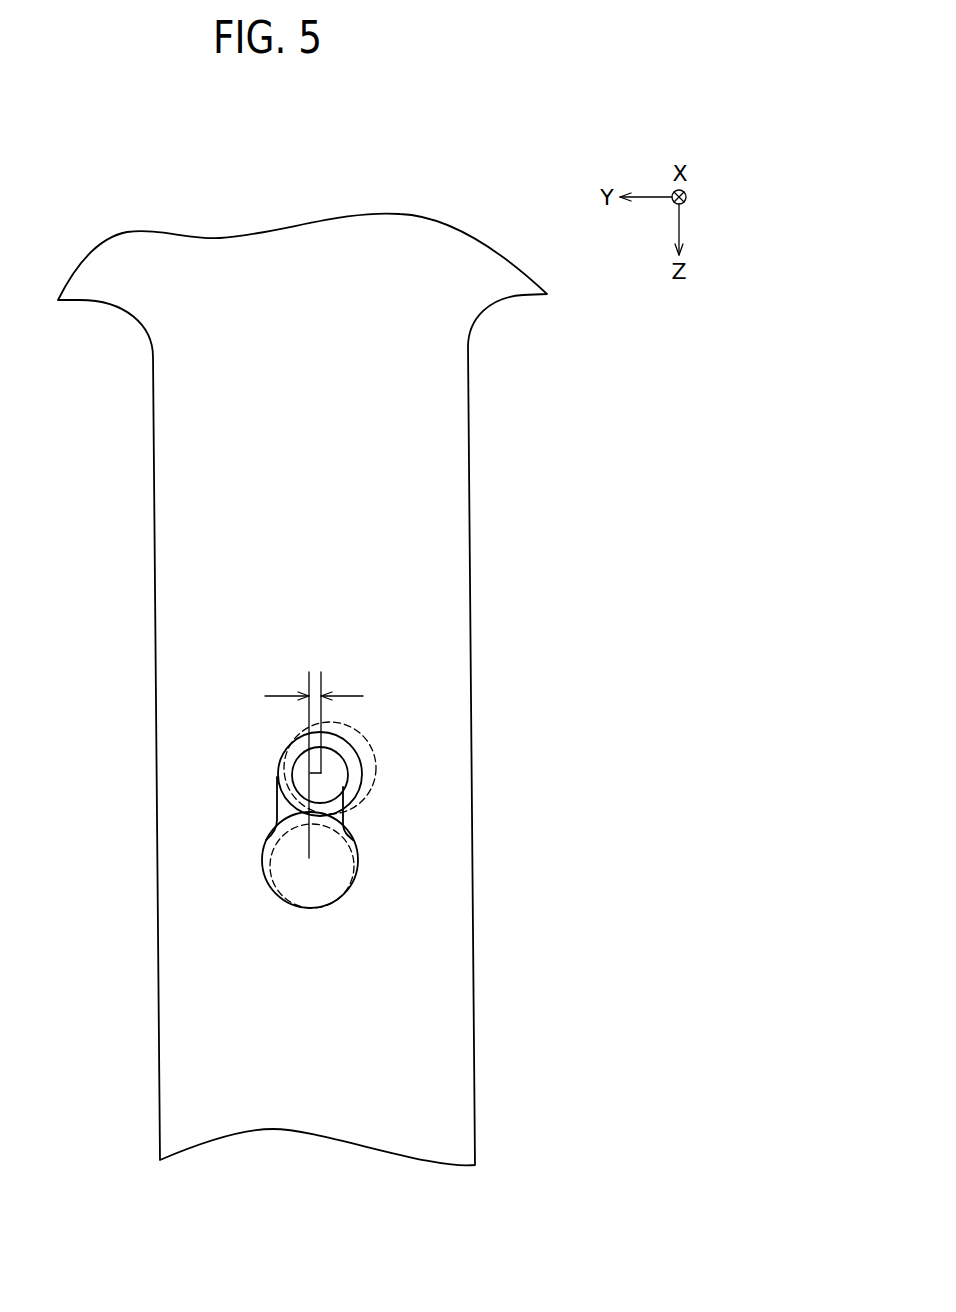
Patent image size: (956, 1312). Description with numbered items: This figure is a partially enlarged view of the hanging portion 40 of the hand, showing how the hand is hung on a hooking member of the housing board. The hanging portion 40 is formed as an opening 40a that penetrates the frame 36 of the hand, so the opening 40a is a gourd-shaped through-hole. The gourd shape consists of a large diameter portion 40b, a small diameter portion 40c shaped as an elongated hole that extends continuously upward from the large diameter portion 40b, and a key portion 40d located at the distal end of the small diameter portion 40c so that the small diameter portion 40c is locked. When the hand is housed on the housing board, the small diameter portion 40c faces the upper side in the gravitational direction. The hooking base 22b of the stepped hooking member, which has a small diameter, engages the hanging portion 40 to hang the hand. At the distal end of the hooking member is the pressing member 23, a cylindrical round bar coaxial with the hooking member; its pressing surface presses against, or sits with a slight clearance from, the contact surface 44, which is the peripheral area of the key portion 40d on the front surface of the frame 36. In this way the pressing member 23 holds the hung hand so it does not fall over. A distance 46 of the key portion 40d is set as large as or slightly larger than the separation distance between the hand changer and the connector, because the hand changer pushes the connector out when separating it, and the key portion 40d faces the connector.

The frame 36 is at (470, 490).
The hanging portion 40 is at (367, 872).
The opening 40a is at (304, 835).
The large diameter portion 40b is at (263, 872).
The small diameter portion 40c is at (278, 802).
The key portion 40d is at (350, 788).
The hooking base 22b is at (292, 738).
The pressing member 23 is at (363, 768).
The contact surface 44 is at (375, 752).
The distance 46 is at (309, 672).